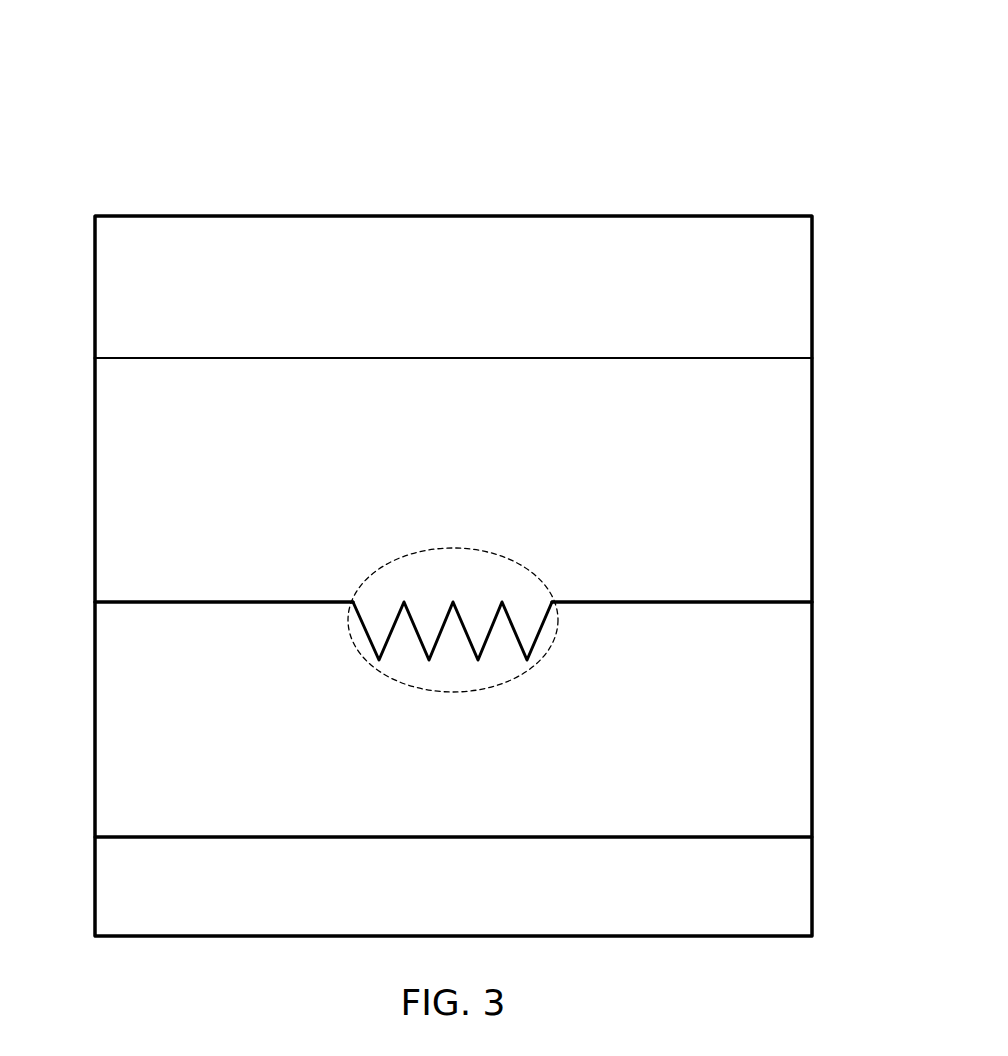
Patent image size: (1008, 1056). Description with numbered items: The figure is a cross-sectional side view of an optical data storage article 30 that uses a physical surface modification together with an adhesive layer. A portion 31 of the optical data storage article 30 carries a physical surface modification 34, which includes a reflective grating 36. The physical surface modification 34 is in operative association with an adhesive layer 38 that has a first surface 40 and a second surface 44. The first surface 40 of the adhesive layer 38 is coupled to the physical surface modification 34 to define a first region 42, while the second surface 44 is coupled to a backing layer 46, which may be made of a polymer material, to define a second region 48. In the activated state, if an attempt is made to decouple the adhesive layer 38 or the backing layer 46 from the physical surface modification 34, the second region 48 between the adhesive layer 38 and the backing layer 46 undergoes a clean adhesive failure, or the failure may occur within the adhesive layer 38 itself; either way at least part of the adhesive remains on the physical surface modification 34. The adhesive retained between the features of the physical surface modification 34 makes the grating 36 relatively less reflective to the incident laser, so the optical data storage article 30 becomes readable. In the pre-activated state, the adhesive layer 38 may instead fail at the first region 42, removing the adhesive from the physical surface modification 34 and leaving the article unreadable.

The optical data storage article 30 is at (783, 83).
The portion 31 is at (812, 886).
The physical surface modification 34 is at (812, 718).
The reflective grating 36 is at (512, 559).
The adhesive layer 38 is at (812, 478).
The first surface 40 is at (143, 600).
The first region 42 is at (95, 601).
The second surface 44 is at (128, 358).
The backing layer 46 is at (812, 286).
The second region 48 is at (95, 358).